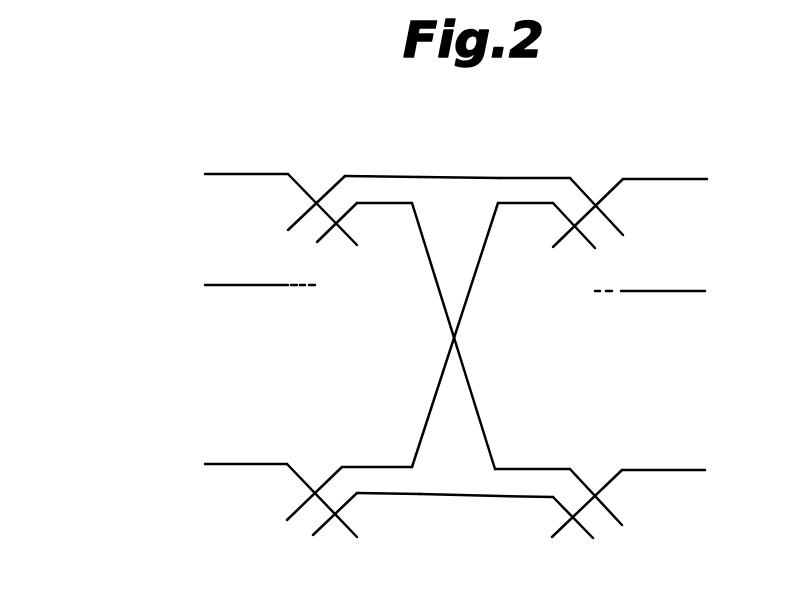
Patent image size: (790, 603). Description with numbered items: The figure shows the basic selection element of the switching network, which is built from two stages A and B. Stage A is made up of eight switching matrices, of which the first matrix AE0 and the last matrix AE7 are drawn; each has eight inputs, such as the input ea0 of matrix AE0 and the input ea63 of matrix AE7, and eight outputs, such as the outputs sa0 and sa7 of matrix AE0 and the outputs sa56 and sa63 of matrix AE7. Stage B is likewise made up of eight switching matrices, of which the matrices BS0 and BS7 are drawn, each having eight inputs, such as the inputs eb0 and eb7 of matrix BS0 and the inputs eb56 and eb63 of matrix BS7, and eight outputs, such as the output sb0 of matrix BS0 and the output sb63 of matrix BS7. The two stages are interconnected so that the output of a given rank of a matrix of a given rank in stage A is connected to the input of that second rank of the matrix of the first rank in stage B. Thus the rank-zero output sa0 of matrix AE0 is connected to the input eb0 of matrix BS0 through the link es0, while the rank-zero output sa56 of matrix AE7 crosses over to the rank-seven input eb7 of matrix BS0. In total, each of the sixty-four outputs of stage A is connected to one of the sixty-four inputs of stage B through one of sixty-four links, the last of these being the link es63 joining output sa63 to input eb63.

The stage A is at (260, 330).
The stage B is at (650, 334).
The input of stage A matrix ea0 is at (205, 174).
The input of stage A matrix ea63 is at (207, 464).
The switching matrix AE0 is at (327, 183).
The switching matrix AE7 is at (305, 470).
The output of stage A sa0 is at (354, 177).
The output of stage A sa7 is at (363, 205).
The output of stage A sa56 is at (341, 465).
The output of stage A sa63 is at (360, 495).
The link es0 is at (477, 177).
The link es63 is at (474, 497).
The input of stage B matrix eb0 is at (571, 178).
The input of stage B matrix eb7 is at (552, 207).
The input of stage B matrix eb56 is at (571, 468).
The input of stage B matrix eb63 is at (552, 500).
The switching matrix BS0 is at (604, 190).
The switching matrix BS7 is at (609, 478).
The output of stage B matrix sb0 is at (707, 179).
The output of stage B matrix sb63 is at (705, 470).